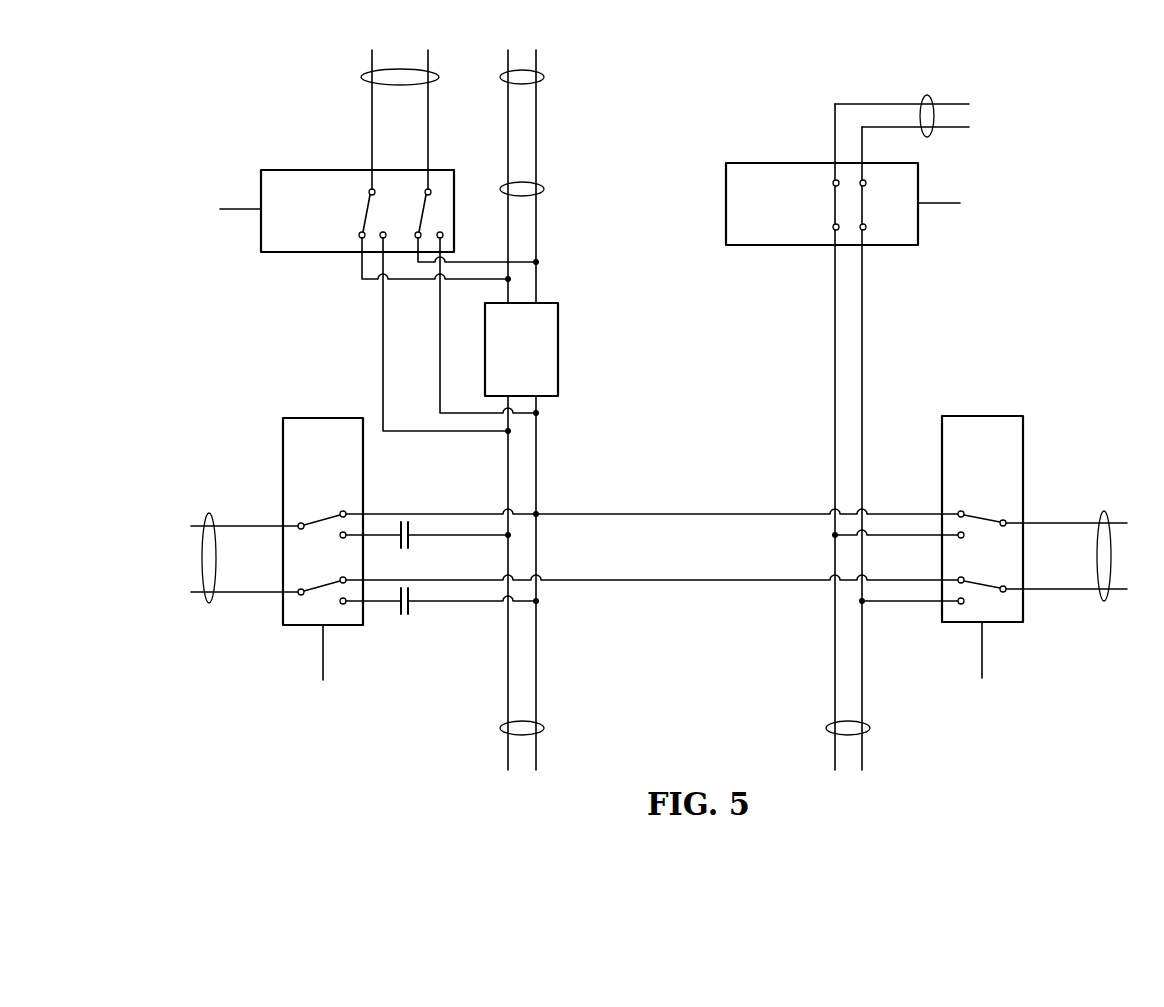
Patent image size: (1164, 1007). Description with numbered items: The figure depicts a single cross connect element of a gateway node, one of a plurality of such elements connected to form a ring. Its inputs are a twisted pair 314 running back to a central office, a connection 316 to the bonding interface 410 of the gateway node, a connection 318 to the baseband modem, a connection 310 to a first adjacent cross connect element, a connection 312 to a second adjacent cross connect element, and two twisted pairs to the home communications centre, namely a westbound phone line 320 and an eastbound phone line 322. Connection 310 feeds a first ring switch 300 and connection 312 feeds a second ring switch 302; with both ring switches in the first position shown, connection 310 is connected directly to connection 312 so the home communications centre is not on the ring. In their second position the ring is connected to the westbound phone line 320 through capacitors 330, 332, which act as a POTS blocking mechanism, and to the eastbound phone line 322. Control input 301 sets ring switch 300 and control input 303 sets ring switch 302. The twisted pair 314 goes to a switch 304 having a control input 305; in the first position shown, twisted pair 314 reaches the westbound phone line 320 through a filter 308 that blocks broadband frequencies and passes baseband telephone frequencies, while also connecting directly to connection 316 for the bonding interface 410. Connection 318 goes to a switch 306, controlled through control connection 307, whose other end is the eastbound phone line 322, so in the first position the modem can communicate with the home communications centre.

The first ring switch 300 is at (338, 496).
The control input 301 is at (323, 652).
The second ring switch 302 is at (1000, 494).
The control input 303 is at (982, 649).
The switch 304 is at (334, 236).
The control input 305 is at (228, 209).
The switch 306 is at (797, 229).
The control connection 307 is at (950, 203).
The filter 308 is at (538, 375).
The connection to first adjacent cross connect element 310 is at (209, 513).
The connection to second adjacent cross connect element 312 is at (1104, 511).
The twisted pair 314 is at (361, 77).
The connection to bonding interface 316 is at (544, 189).
The connection to baseband modem 318 is at (929, 96).
The westbound phone line 320 is at (501, 728).
The eastbound phone line 322 is at (871, 728).
The capacitor 330 is at (409, 546).
The capacitor 332 is at (409, 612).
The bonding interface 410 is at (544, 77).